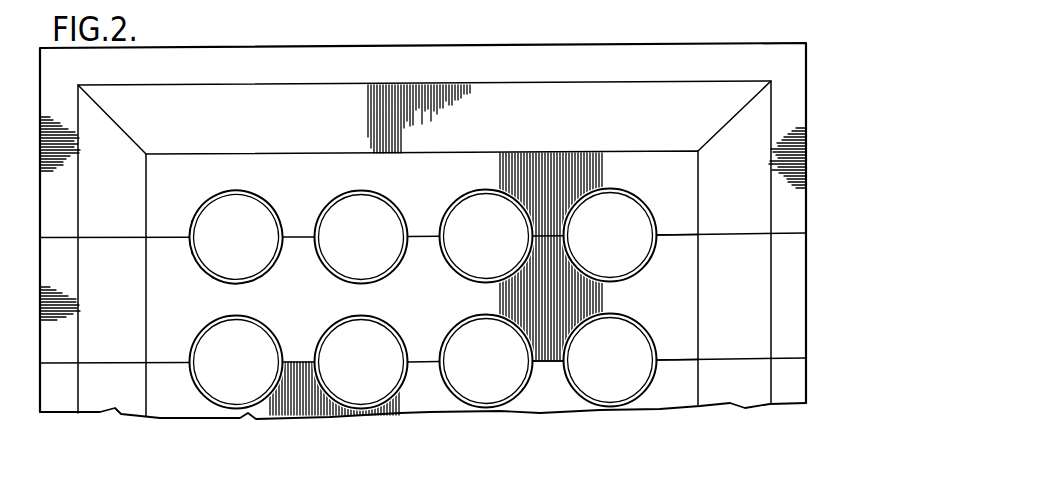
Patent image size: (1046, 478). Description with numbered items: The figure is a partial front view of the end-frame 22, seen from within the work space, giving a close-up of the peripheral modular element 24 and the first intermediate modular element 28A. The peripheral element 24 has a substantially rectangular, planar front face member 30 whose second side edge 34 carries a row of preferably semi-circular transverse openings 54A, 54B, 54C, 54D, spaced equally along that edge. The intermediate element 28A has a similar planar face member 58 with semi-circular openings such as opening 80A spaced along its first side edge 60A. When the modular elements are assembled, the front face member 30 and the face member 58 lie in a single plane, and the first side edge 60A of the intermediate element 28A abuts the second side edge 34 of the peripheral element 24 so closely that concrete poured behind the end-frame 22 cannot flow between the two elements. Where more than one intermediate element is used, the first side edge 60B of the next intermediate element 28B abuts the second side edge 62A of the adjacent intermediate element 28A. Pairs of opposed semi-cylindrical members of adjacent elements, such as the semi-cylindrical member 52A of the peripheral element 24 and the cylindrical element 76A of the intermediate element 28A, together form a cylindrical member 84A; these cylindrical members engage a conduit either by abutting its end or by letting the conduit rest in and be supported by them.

The end-frame 22 is at (660, 36).
The peripheral modular element 24 is at (818, 101).
The first intermediate modular element 28A is at (818, 287).
The next intermediate modular element 28B is at (665, 389).
The front face member 30 is at (331, 108).
The second side edge 34 is at (299, 235).
The semi-cylindrical member 52A is at (249, 191).
The transverse opening 54A is at (222, 220).
The transverse opening 54B is at (369, 219).
The transverse opening 54C is at (482, 219).
The transverse opening 54D is at (611, 219).
The face member 58 is at (667, 296).
The first side edge 60A is at (419, 246).
The first side edge 60B is at (545, 370).
The second side edge 62A is at (423, 371).
The cylindrical element 76A is at (198, 277).
The semi-circular opening 80A is at (246, 257).
The cylindrical member 84A is at (209, 245).